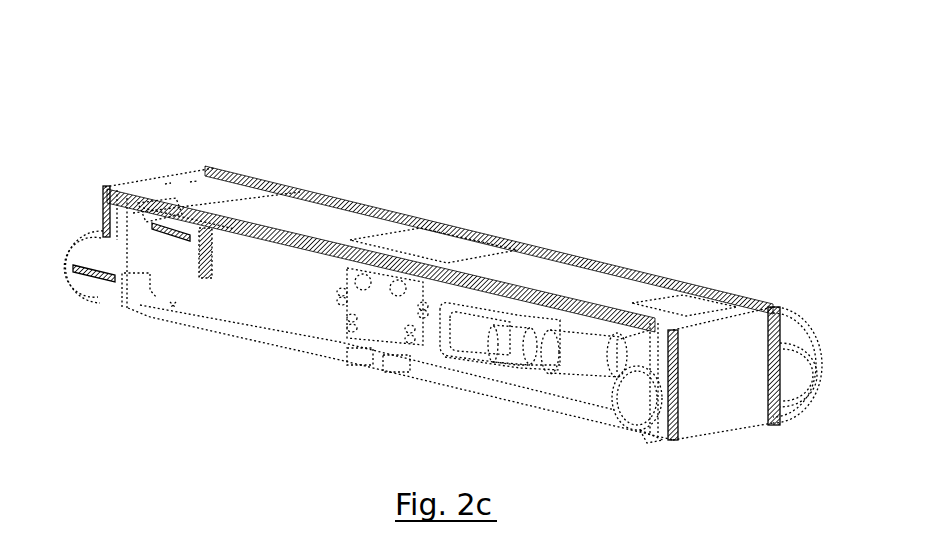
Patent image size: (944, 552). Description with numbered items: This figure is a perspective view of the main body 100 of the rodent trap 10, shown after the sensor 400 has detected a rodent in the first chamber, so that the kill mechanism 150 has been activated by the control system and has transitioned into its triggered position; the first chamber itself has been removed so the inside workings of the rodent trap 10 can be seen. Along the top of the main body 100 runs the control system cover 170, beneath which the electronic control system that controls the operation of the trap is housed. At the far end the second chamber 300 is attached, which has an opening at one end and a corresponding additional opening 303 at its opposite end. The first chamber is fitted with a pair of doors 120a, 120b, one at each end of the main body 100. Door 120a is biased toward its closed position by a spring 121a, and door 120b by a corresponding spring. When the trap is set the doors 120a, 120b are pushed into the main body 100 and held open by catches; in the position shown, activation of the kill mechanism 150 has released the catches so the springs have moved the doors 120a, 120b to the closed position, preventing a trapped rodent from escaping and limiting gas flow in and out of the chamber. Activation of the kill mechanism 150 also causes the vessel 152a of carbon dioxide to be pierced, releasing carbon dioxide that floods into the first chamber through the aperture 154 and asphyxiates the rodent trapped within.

The rodent trap 10 is at (129, 126).
The main body 100 is at (312, 206).
The control system cover 170 is at (467, 240).
The kill mechanism 150 is at (558, 328).
The vessel of carbon dioxide 152a is at (577, 360).
The second chamber 300 is at (800, 330).
The additional opening 303 is at (790, 378).
The door 120a is at (80, 290).
The spring 121a is at (90, 276).
The sensor 400 is at (361, 331).
The aperture 154 is at (530, 373).
The door 120b is at (625, 418).